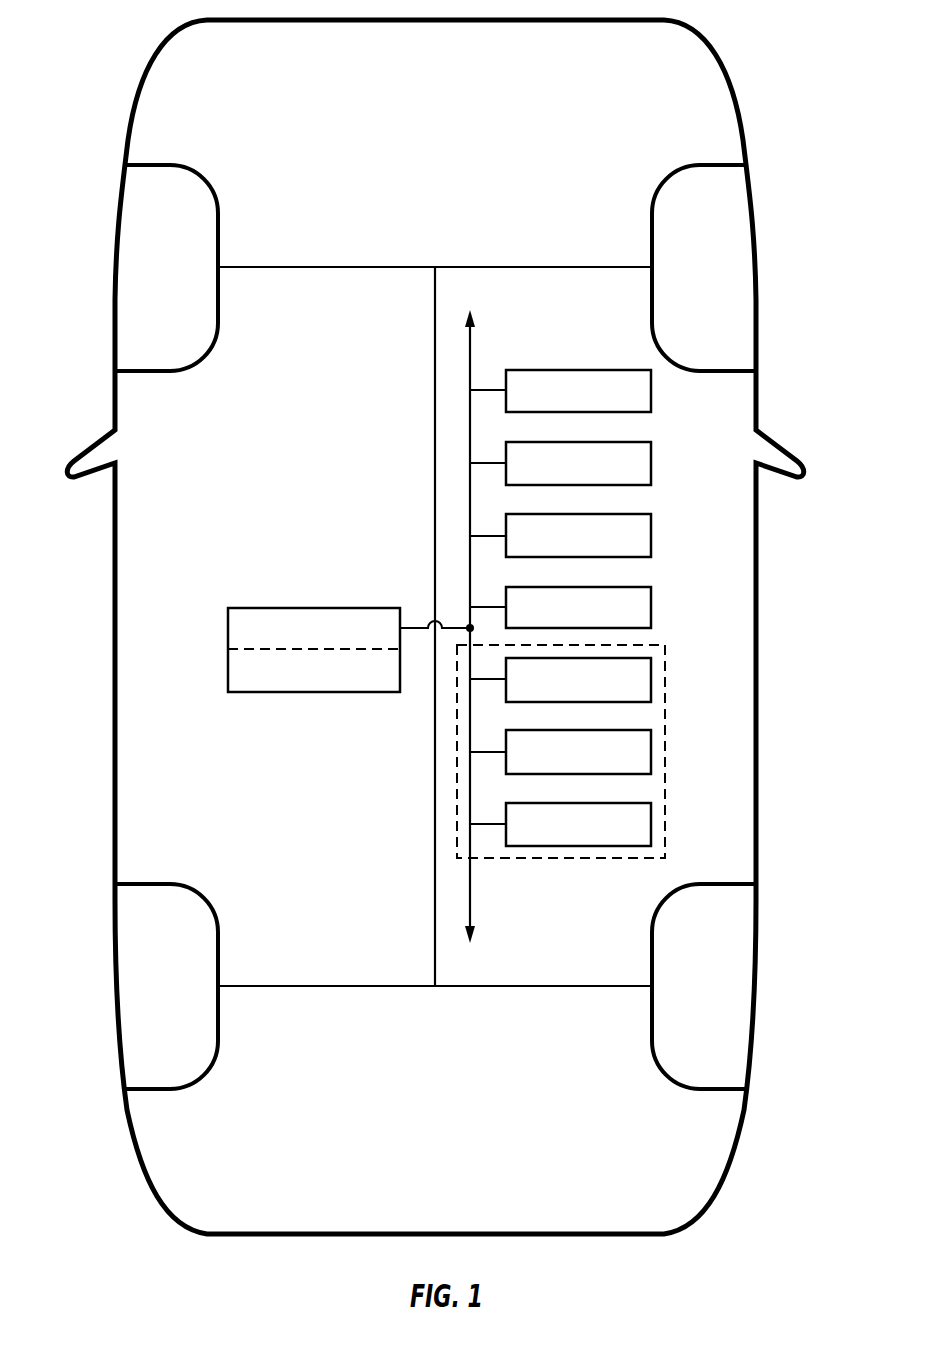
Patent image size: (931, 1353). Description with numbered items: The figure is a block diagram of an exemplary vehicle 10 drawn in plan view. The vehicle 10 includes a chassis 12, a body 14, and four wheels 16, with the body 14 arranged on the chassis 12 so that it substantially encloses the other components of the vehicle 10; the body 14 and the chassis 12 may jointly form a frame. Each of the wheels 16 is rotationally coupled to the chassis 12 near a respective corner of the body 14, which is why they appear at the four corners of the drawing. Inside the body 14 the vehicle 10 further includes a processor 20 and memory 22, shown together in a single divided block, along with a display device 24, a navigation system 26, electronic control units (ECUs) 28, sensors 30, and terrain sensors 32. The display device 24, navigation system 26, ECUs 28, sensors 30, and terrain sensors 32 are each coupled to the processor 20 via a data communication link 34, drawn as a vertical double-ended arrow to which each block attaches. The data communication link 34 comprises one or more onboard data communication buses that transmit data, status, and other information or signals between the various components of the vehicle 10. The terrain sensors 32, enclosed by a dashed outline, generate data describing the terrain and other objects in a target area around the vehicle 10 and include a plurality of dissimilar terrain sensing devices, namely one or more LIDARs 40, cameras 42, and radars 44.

The vehicle 10 is at (771, 55).
The chassis 12 is at (434, 897).
The body 14 is at (114, 580).
The wheels 16 is at (140, 290).
The processor 20 is at (281, 607).
The memory 22 is at (315, 693).
The display device 24 is at (652, 390).
The navigation system 26 is at (652, 463).
The electronic control units (ECUs) 28 is at (652, 536).
The sensors 30 is at (652, 608).
The terrain sensors 32 is at (665, 656).
The data communication link 34 is at (470, 347).
The Light Detection and Ranging devices (LIDARs) 40 is at (652, 679).
The cameras 42 is at (652, 752).
The radars 44 is at (652, 824).